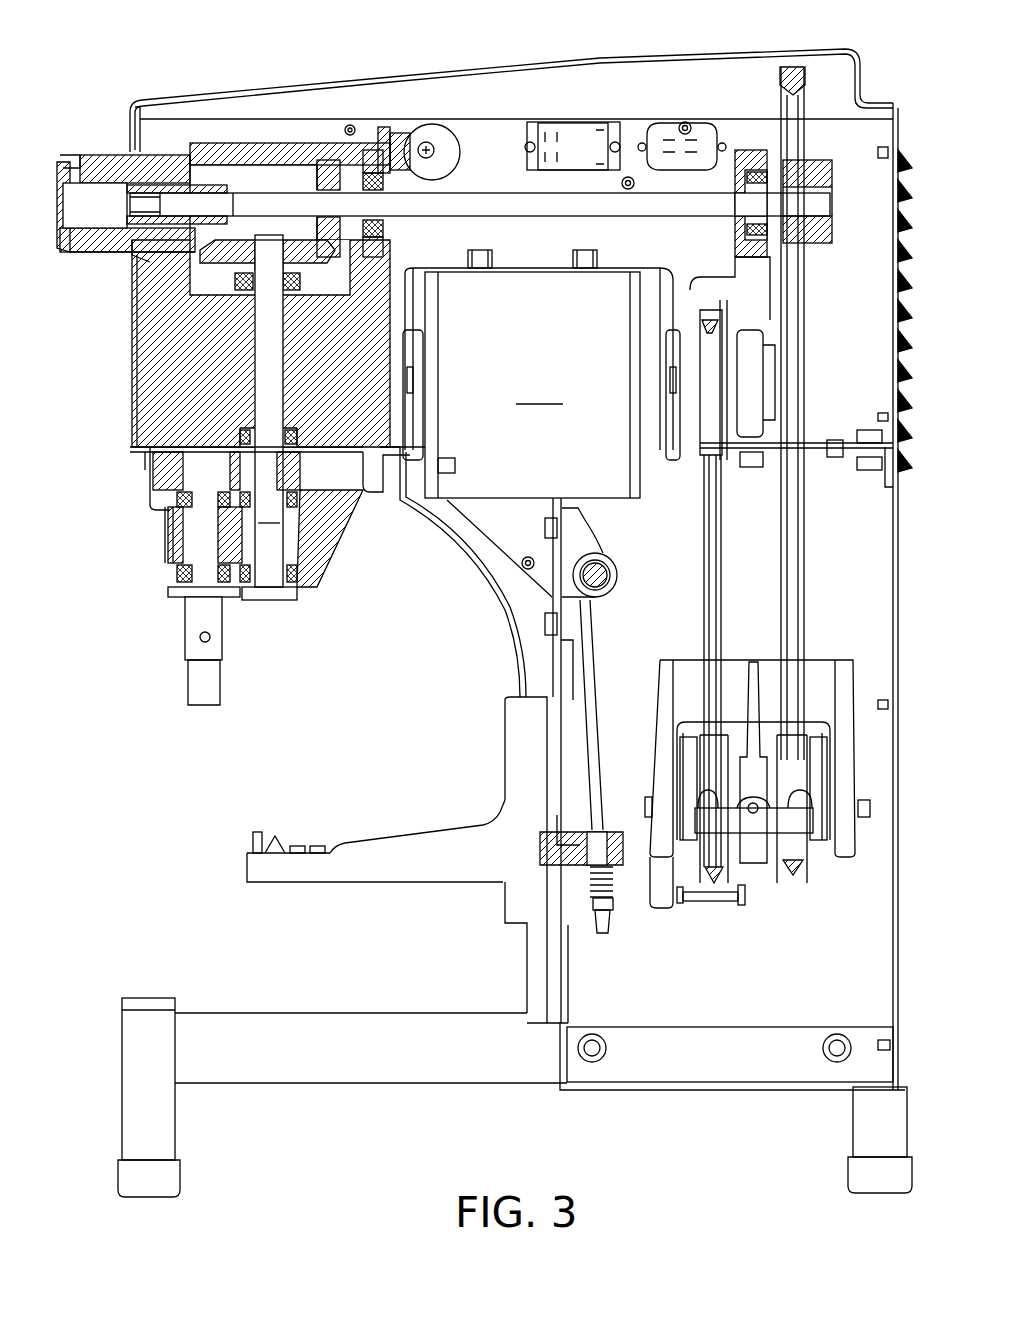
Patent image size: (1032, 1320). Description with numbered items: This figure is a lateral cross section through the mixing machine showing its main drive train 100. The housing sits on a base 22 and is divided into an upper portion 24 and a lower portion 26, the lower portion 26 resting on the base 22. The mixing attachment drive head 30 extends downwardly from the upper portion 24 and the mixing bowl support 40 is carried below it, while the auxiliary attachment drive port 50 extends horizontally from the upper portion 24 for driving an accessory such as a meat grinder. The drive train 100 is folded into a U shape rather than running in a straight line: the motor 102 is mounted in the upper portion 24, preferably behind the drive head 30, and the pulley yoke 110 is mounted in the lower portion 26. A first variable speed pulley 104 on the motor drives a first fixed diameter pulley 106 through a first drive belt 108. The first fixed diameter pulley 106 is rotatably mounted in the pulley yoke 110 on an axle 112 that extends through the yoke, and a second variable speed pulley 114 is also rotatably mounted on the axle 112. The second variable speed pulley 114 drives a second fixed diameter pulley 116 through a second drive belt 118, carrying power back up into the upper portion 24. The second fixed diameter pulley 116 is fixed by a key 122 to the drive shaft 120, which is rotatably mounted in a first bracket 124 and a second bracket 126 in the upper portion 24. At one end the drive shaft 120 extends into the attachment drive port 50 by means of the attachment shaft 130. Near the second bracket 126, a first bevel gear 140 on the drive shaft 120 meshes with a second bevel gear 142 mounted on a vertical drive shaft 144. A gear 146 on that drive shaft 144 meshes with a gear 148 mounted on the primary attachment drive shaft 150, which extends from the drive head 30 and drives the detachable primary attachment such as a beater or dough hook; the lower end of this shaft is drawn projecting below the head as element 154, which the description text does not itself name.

The base 22 is at (135, 1122).
The upper portion 24 is at (905, 228).
The lower portion 26 is at (900, 907).
The mixing attachment drive head 30 is at (160, 570).
The mixing bowl support 40 is at (285, 868).
The auxiliary attachment drive port 50 is at (148, 160).
The drive train 100 is at (812, 528).
The motor 102 is at (530, 374).
The first variable speed pulley 104 is at (740, 380).
The first fixed diameter pulley 106 is at (728, 895).
The first drive belt 108 is at (710, 600).
The pulley yoke 110 is at (842, 683).
The axle 112 is at (805, 880).
The second variable speed pulley 114 is at (800, 887).
The second fixed diameter pulley 116 is at (808, 75).
The second drive belt 118 is at (790, 412).
The drive shaft 120 is at (484, 192).
The key 122 is at (838, 180).
The first bracket 124 is at (735, 152).
The second bracket 126 is at (380, 127).
The attachment shaft 130 is at (152, 190).
The first bevel gear 140 is at (318, 185).
The second bevel gear 142 is at (228, 240).
The drive shaft 144 is at (260, 362).
The gear 146 is at (318, 535).
The gear 148 is at (150, 453).
The primary attachment drive shaft 150 is at (205, 540).
The output shaft 154 is at (205, 688).